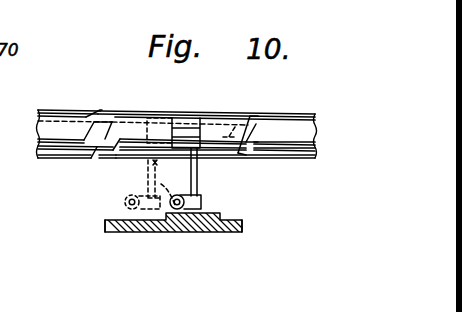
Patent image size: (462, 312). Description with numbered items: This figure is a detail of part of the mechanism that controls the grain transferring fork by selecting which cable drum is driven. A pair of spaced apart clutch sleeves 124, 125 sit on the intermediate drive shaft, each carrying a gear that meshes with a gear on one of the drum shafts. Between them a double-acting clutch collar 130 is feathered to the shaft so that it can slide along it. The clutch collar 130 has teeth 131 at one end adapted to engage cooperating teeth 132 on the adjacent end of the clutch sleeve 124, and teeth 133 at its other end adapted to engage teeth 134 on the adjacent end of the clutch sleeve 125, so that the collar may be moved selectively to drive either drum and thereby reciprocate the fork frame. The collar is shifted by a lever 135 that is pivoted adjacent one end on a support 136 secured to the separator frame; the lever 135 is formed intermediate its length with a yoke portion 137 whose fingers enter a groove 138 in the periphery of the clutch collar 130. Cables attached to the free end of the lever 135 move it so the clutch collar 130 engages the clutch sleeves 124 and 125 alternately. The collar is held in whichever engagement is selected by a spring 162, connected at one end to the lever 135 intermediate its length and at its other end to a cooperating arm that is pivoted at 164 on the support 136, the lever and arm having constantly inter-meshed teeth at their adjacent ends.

The clutch sleeve 124 is at (57, 155).
The clutch sleeve 125 is at (317, 138).
The double-acting clutch collar 130 is at (143, 117).
The teeth 131 is at (92, 156).
The teeth 132 is at (110, 99).
The teeth 133 is at (258, 116).
The teeth 134 is at (240, 155).
The lever 135 is at (120, 213).
The support 136 is at (173, 233).
The yoke portion 137 is at (165, 165).
The groove 138 is at (176, 117).
The spring 162 is at (125, 200).
The pivot 164 is at (166, 182).